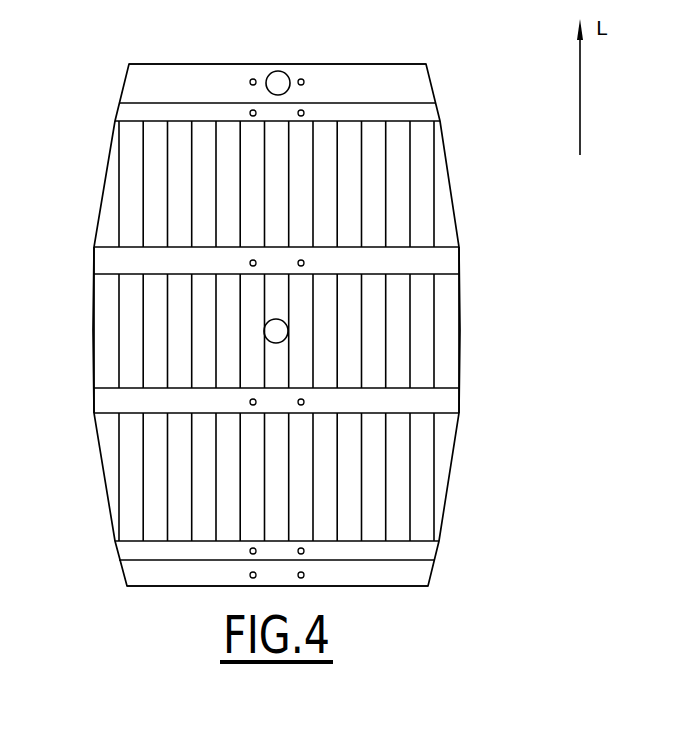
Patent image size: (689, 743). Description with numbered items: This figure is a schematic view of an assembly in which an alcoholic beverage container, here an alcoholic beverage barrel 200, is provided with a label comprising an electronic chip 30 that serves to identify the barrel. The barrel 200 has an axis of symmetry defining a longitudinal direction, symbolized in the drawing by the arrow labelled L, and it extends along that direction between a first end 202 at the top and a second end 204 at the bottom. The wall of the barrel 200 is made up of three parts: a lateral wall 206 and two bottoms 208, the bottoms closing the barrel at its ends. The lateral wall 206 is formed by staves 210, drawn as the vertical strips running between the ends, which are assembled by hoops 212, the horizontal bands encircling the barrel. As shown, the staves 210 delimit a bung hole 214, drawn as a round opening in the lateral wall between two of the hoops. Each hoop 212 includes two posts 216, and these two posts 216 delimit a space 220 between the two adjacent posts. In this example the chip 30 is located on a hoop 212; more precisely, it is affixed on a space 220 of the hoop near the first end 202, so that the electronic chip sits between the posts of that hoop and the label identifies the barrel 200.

The alcoholic beverage barrel 200 is at (492, 473).
The first end 202 is at (390, 63).
The second end 204 is at (380, 588).
The lateral wall 206 is at (110, 328).
The bottoms 208 is at (153, 63).
The staves 210 is at (447, 288).
The hoops 212 is at (105, 260).
The bung hole 214 is at (265, 333).
The posts 216 is at (250, 113).
The space 220 is at (254, 74).
The electronic chip 30 is at (277, 71).